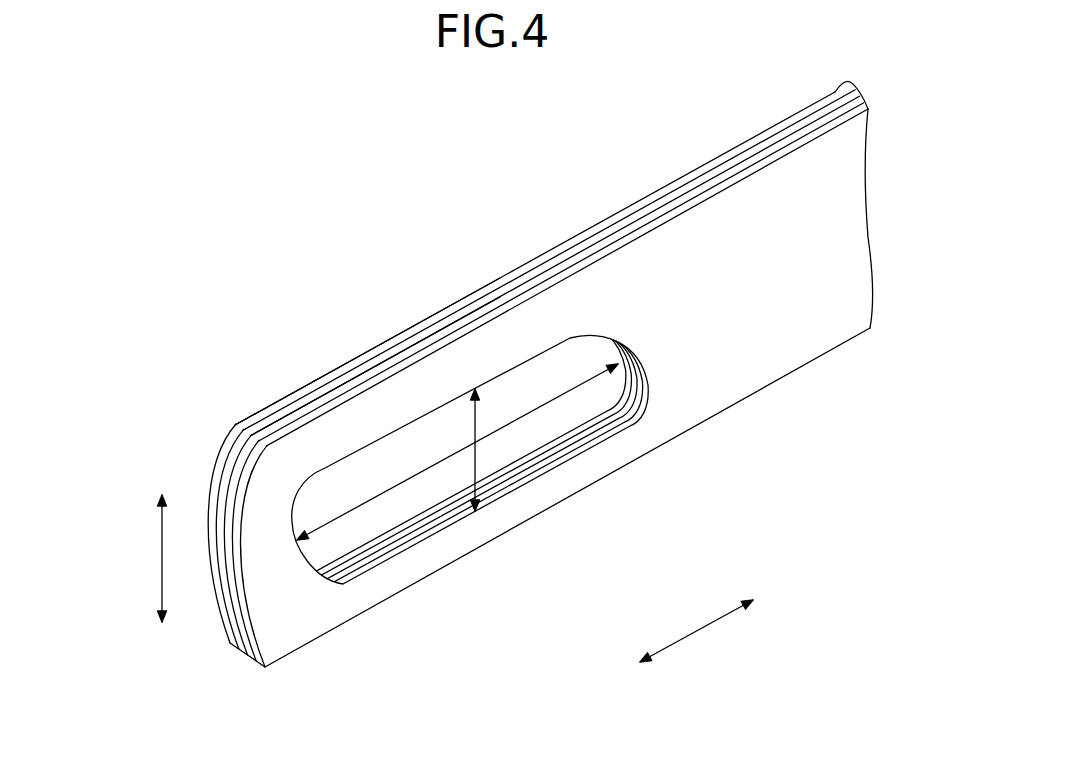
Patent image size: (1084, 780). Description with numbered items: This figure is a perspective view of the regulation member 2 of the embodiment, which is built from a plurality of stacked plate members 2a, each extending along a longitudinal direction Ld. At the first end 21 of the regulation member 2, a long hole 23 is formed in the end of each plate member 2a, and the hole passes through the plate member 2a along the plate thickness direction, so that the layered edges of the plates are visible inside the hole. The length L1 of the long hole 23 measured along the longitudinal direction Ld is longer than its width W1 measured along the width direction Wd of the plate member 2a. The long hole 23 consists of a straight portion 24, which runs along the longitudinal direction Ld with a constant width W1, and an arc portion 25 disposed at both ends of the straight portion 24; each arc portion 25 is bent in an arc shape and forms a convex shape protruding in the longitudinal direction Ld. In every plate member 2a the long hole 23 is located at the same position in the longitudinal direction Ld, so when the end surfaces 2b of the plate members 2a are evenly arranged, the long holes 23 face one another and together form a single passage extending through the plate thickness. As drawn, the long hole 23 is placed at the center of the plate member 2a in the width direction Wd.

The regulation member 2 is at (513, 374).
The first end 21 is at (370, 322).
The plate member 2a is at (264, 428).
The end surface 2b is at (218, 484).
The long hole 23 is at (438, 450).
The straight portion 24 is at (498, 493).
The arc portion 25 is at (428, 508).
The length of the long hole L1 is at (409, 478).
The width of the long hole W1 is at (480, 424).
The width direction Wd is at (143, 558).
The longitudinal direction Ld is at (696, 631).